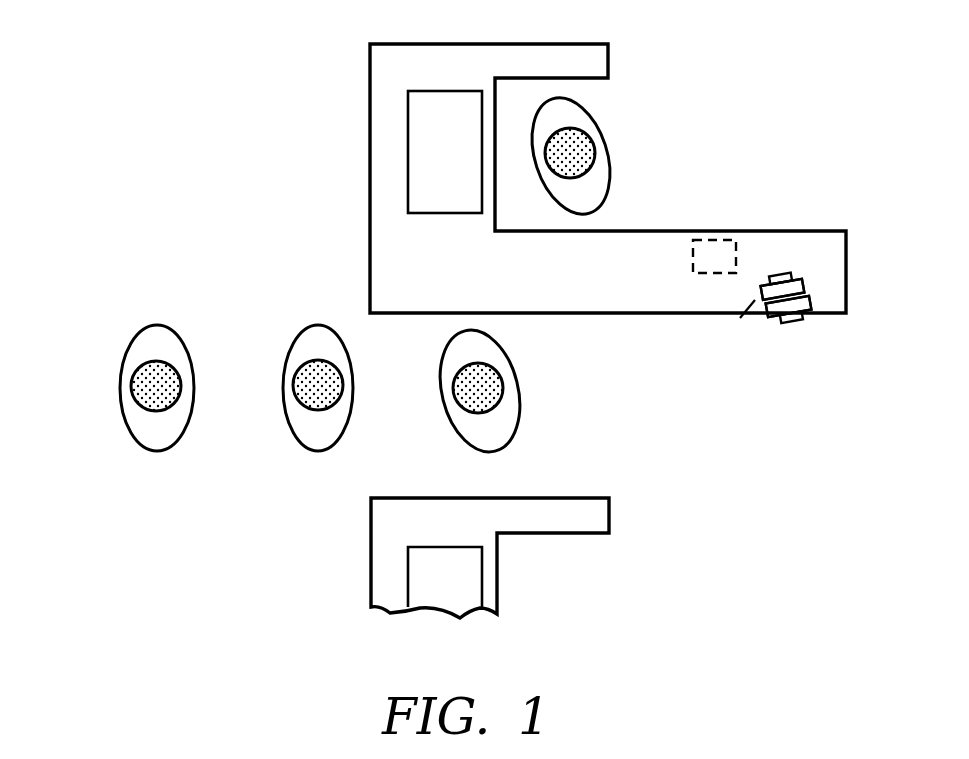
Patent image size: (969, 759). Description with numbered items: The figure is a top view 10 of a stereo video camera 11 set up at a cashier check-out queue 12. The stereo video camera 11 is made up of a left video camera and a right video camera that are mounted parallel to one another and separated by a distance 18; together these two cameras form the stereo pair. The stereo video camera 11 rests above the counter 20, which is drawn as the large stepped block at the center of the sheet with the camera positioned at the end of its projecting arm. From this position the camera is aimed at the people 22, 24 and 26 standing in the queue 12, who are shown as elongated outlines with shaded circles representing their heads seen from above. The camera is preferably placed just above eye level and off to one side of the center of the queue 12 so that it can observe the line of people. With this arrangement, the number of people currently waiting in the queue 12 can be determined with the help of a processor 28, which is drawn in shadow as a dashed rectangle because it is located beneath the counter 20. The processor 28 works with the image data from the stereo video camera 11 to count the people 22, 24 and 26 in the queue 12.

The top view 10 is at (260, 131).
The stereo video camera 11 is at (814, 373).
The cashier check-out queue 12 is at (298, 344).
The distance 18 is at (752, 302).
The counter 20 is at (747, 231).
The person in queue 22 is at (517, 378).
The person in queue 24 is at (300, 330).
The person in queue 26 is at (156, 326).
The processor 28 is at (697, 240).